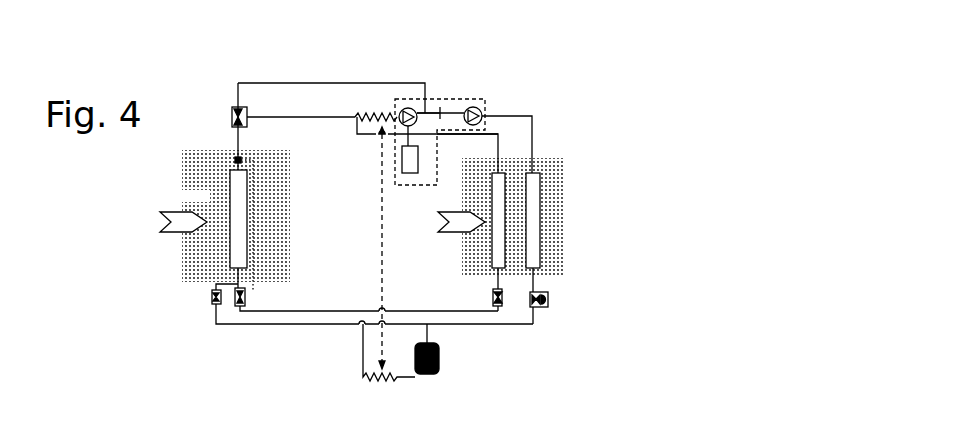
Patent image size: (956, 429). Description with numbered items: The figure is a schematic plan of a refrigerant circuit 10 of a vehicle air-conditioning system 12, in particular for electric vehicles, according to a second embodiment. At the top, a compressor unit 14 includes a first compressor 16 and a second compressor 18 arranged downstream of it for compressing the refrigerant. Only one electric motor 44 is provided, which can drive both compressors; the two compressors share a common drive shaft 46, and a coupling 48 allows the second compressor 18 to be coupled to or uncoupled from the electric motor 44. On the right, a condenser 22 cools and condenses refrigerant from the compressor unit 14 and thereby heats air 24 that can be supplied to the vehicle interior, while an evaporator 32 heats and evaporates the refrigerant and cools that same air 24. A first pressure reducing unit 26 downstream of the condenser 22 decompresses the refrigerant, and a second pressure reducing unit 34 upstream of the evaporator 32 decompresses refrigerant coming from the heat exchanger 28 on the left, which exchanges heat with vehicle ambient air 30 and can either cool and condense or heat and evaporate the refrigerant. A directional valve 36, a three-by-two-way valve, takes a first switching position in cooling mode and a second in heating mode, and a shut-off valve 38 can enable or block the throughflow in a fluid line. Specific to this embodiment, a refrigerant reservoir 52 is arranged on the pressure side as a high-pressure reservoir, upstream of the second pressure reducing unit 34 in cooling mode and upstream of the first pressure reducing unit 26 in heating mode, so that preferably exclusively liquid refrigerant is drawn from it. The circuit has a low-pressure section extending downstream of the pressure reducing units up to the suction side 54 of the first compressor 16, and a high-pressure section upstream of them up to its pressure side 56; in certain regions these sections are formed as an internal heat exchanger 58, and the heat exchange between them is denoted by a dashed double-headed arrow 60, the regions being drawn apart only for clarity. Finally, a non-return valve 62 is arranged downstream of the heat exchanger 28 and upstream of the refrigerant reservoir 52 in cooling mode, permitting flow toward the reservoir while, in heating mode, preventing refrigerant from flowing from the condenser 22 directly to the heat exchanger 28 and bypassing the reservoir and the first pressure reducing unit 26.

The refrigerant circuit 10 is at (557, 68).
The vehicle air-conditioning system 12 is at (367, 221).
The compressor unit 14 is at (393, 167).
The first compressor 16 is at (404, 107).
The second compressor 18 is at (482, 108).
The condenser 22 is at (533, 230).
The air 24 is at (456, 227).
The first pressure reducing unit 26 is at (237, 308).
The heat exchanger 28 is at (235, 250).
The vehicle ambient air 30 is at (178, 206).
The evaporator 32 is at (498, 195).
The second pressure reducing unit 34 is at (501, 300).
The directional valve 36 is at (232, 118).
The shut-off valve 38 is at (548, 299).
The electric motor 44 is at (408, 174).
The common drive shaft 46 is at (434, 108).
The coupling 48 is at (451, 110).
The refrigerant reservoir 52 is at (441, 355).
The suction side 54 is at (388, 104).
The pressure side 56 is at (428, 130).
The internal heat exchanger 58 is at (366, 106).
The dashed double-headed arrow 60 is at (382, 231).
The non-return valve 62 is at (212, 298).